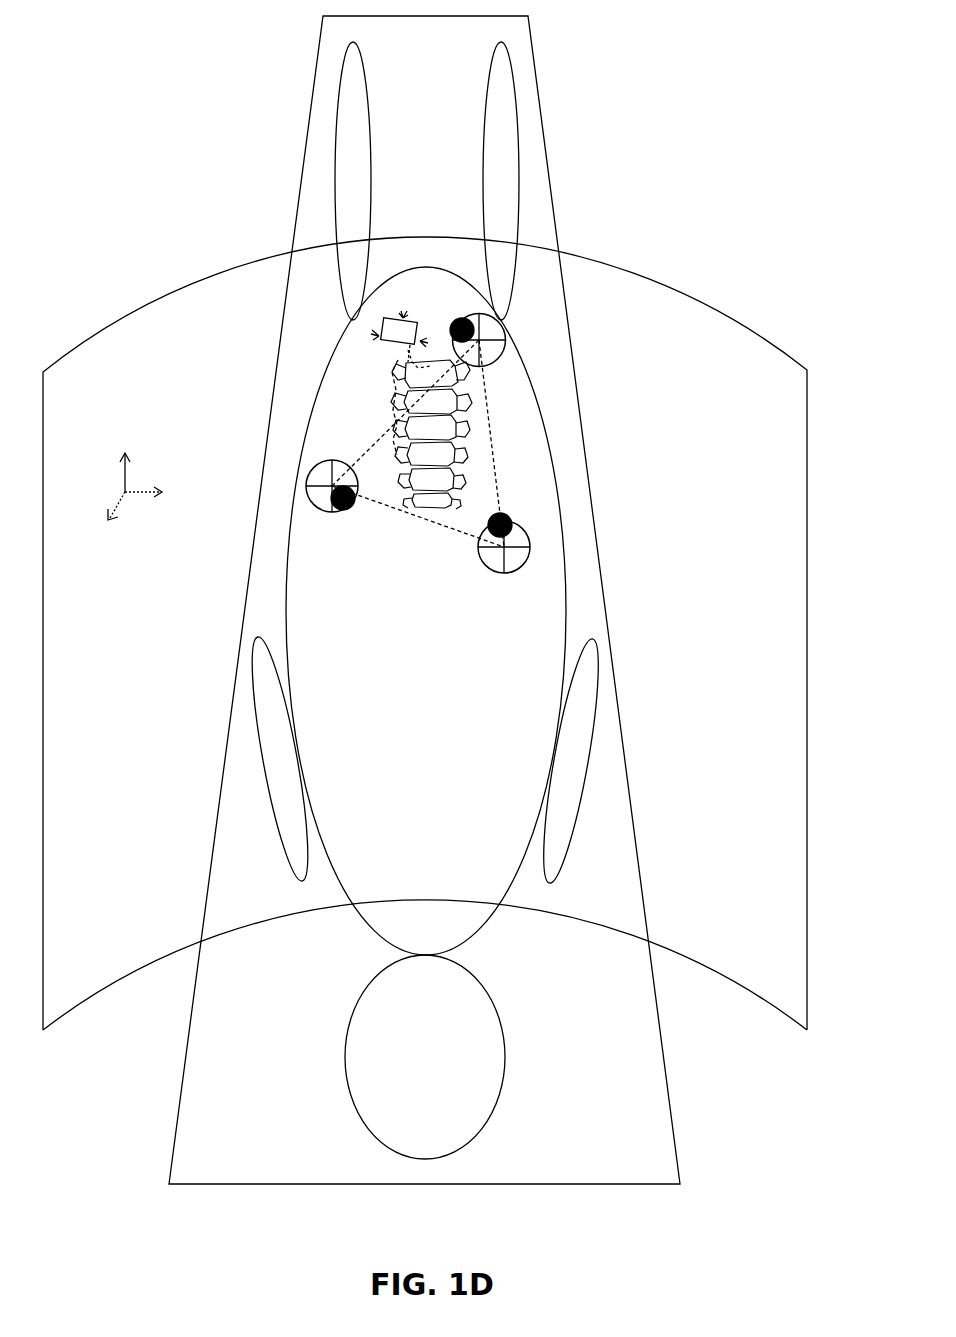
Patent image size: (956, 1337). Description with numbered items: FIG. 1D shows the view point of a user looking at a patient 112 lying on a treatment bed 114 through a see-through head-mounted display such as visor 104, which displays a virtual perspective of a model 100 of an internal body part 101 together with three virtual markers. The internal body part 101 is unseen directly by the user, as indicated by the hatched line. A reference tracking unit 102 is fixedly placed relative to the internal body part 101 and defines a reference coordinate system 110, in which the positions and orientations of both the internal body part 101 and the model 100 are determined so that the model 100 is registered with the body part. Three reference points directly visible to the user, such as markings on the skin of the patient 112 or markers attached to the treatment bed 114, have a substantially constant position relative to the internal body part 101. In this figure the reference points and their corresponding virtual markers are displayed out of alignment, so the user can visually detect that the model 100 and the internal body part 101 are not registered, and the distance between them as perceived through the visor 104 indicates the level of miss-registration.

The model 100 is at (485, 427).
The internal body part 101 is at (398, 383).
The reference tracking unit 102 is at (397, 347).
The visor 104 is at (807, 585).
The reference coordinate system 110 is at (127, 478).
The patient 112 is at (490, 920).
The treatment bed 114 is at (675, 1135).